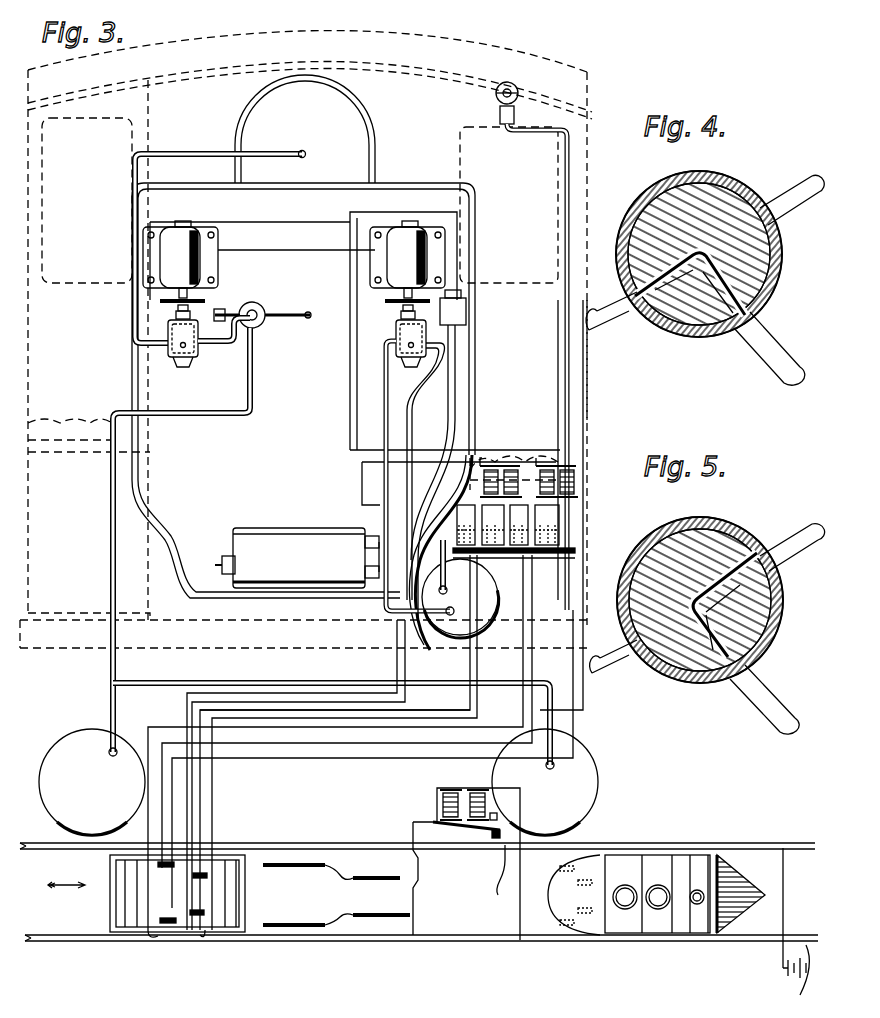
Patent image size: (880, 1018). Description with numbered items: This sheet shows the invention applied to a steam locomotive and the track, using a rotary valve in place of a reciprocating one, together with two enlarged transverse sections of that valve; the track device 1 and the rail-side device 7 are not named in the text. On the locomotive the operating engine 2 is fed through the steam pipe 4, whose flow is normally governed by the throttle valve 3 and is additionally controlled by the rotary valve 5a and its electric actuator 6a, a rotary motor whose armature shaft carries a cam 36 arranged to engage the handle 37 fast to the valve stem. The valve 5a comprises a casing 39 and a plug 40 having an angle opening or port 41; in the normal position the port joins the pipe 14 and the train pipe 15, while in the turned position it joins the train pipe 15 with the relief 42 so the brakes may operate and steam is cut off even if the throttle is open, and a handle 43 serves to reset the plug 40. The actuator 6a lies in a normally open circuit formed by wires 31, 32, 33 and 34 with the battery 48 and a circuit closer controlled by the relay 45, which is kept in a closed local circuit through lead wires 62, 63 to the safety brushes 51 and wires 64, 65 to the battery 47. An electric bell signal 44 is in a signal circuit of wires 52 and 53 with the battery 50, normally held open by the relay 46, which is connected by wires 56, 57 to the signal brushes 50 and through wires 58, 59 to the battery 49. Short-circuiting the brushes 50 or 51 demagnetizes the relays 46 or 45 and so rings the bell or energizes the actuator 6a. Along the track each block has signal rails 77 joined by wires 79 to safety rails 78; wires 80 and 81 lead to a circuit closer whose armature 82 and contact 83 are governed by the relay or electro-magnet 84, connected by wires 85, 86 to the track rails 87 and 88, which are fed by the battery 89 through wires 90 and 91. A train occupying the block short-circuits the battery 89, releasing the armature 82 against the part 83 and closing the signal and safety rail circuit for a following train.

In FIG. 3, the track contact device 1 is at (128, 932).
In FIG. 3, the operating engine 2 is at (62, 810).
In FIG. 3, the throttle valve 3 is at (212, 527).
In FIG. 3, the steam pipe 4 is at (218, 151).
In FIG. 3, the rotary valve 5a is at (197, 358).
In FIG. 4, the rotary valve 5a is at (655, 200).
In FIG. 5, the rotary valve 5a is at (641, 556).
In FIG. 3, the electric actuator (rotary motor) 6a is at (195, 230).
In FIG. 3, the track device 7 is at (664, 932).
In FIG. 4, the pipe 14 is at (611, 309).
In FIG. 5, the pipe 14 is at (606, 667).
In FIG. 4, the train pipe 15 is at (762, 360).
In FIG. 5, the train pipe 15 is at (760, 702).
In FIG. 3, the wire 31 is at (252, 222).
In FIG. 3, the wire 32 is at (255, 250).
In FIG. 3, the wire 33 is at (362, 466).
In FIG. 3, the wire 34 is at (348, 435).
In FIG. 3, the cam 36 is at (279, 320).
In FIG. 3, the handle 37 is at (205, 300).
In FIG. 4, the casing 39 is at (770, 300).
In FIG. 5, the casing 39 is at (766, 650).
In FIG. 4, the plug 40 is at (710, 192).
In FIG. 4, the angle opening or port 41 is at (717, 288).
In FIG. 5, the angle opening or port 41 is at (720, 652).
In FIG. 4, the relief 42 is at (792, 180).
In FIG. 5, the relief 42 is at (788, 542).
In FIG. 3, the handle 43 is at (227, 320).
In FIG. 3, the signal 44 is at (520, 99).
In FIG. 3, the relay 45 is at (483, 480).
In FIG. 3, the relay 46 is at (566, 477).
In FIG. 3, the battery 47 is at (452, 516).
In FIG. 3, the battery 48 is at (468, 589).
In FIG. 3, the battery 49 is at (546, 519).
In FIG. 3, the signal brushes or contact pieces 50 is at (556, 531).
In FIG. 3, the safety brushes or contact pieces 51 is at (200, 905).
In FIG. 3, the wire 52 is at (566, 394).
In FIG. 3, the wire 53 is at (586, 414).
In FIG. 3, the wire 56 is at (588, 716).
In FIG. 3, the wire 57 is at (148, 740).
In FIG. 3, the wire 58 is at (164, 803).
In FIG. 3, the wire 59 is at (186, 790).
In FIG. 3, the lead wire 62 is at (396, 668).
In FIG. 3, the lead wire 63 is at (405, 668).
In FIG. 3, the wire 64 is at (468, 709).
In FIG. 3, the wire 65 is at (478, 668).
In FIG. 3, the signal rails 77 is at (305, 869).
In FIG. 3, the safety rails 78 is at (385, 880).
In FIG. 3, the wires 79 is at (339, 895).
In FIG. 3, the wire 80 is at (411, 833).
In FIG. 3, the wire 81 is at (419, 880).
In FIG. 3, the circuit closer armature 82 is at (472, 832).
In FIG. 3, the circuit closer contact 83 is at (496, 842).
In FIG. 3, the relay or electro-magnet 84 is at (442, 806).
In FIG. 3, the wire 85 is at (506, 880).
In FIG. 3, the wire 86 is at (520, 927).
In FIG. 3, the track rail 87 is at (735, 849).
In FIG. 3, the track rail 88 is at (745, 942).
In FIG. 3, the battery 89 is at (786, 976).
In FIG. 3, the wire 90 is at (785, 918).
In FIG. 3, the wire 91 is at (808, 979).